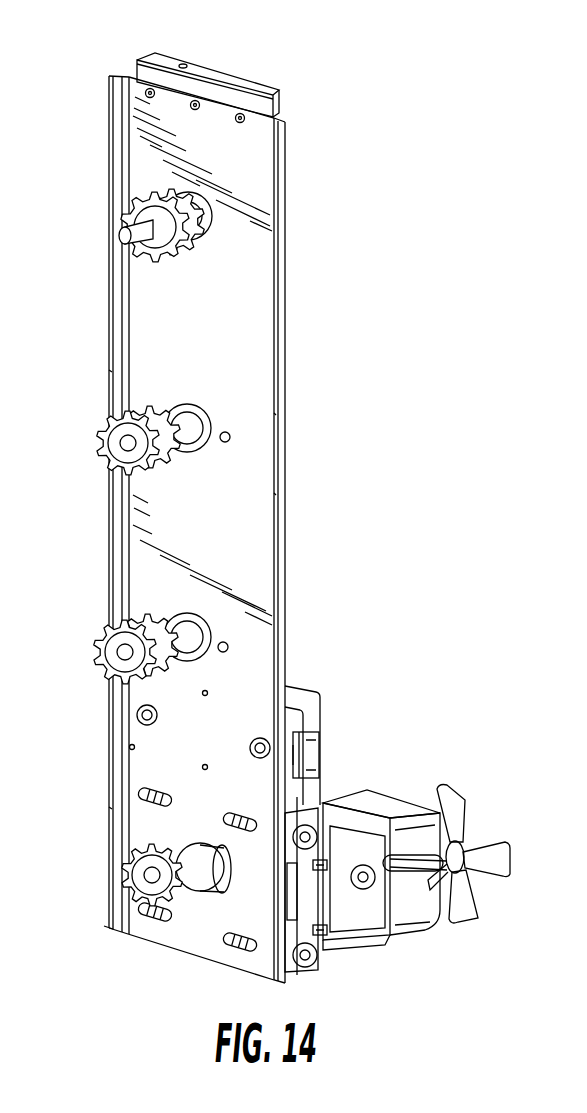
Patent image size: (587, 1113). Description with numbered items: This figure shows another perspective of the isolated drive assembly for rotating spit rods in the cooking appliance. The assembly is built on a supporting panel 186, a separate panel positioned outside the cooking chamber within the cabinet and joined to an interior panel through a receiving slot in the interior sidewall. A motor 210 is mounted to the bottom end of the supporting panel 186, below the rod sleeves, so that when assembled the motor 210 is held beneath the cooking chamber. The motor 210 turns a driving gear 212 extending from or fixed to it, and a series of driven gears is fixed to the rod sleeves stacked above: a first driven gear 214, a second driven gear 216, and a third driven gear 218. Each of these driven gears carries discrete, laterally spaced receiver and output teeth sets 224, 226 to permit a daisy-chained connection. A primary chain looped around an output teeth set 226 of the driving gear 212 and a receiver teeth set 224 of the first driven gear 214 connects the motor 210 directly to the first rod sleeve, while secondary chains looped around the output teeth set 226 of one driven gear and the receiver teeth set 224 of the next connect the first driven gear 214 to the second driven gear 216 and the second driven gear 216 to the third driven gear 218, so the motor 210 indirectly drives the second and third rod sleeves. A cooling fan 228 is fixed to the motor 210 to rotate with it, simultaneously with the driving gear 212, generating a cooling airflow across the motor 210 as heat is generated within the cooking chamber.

The supporting panel 186 is at (282, 162).
The motor 210 is at (345, 940).
The driving gear 212 is at (148, 878).
The first driven gear 214 is at (110, 652).
The second driven gear 216 is at (118, 450).
The third driven gear 218 is at (118, 232).
The receiver teeth set 224 is at (147, 186).
The output teeth set 226 is at (150, 386).
The cooling fan 228 is at (490, 855).